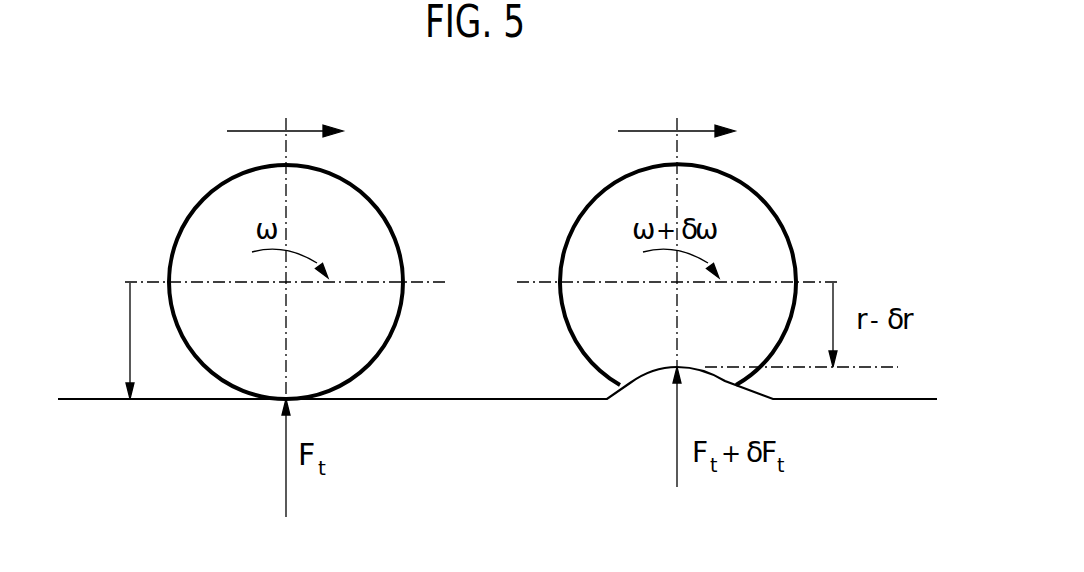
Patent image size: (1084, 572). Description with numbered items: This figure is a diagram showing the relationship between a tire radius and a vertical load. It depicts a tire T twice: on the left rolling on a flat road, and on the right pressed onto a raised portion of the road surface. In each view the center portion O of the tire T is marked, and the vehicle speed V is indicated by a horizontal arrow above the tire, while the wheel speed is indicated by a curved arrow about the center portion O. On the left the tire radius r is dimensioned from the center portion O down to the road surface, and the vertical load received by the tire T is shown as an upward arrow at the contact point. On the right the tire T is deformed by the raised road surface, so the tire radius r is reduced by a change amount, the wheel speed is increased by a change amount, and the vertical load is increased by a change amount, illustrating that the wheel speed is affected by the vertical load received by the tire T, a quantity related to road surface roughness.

The tire T is at (386, 212).
The center portion of the tire O is at (482, 257).
The vehicle speed V is at (481, 108).
The tire radius r is at (120, 341).